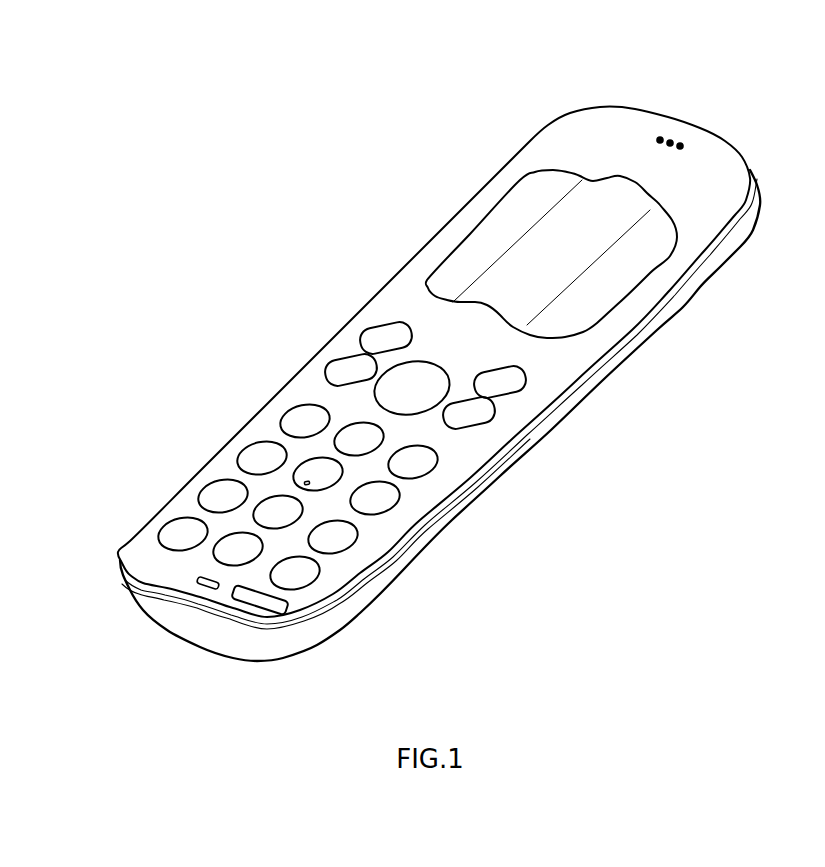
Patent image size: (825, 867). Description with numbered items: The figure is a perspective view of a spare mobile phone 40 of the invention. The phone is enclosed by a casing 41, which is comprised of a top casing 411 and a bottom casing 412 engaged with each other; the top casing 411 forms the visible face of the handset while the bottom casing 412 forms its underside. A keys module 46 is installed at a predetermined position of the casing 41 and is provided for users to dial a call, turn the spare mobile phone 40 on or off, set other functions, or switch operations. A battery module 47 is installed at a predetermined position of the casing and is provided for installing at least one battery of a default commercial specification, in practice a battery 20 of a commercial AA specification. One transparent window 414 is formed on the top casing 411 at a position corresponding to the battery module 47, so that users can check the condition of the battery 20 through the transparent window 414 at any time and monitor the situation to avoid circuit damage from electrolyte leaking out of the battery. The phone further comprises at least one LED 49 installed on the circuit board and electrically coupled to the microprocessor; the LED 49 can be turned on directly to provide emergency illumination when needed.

The spare mobile phone 40 is at (397, 375).
The casing 41 is at (120, 578).
The bottom casing 412 is at (255, 650).
The transparent window 414 is at (505, 230).
The LED 49 is at (703, 152).
The keys module 46 is at (299, 466).
The top casing 411 is at (305, 395).
The battery 20 is at (560, 253).
The battery module 47 is at (330, 508).